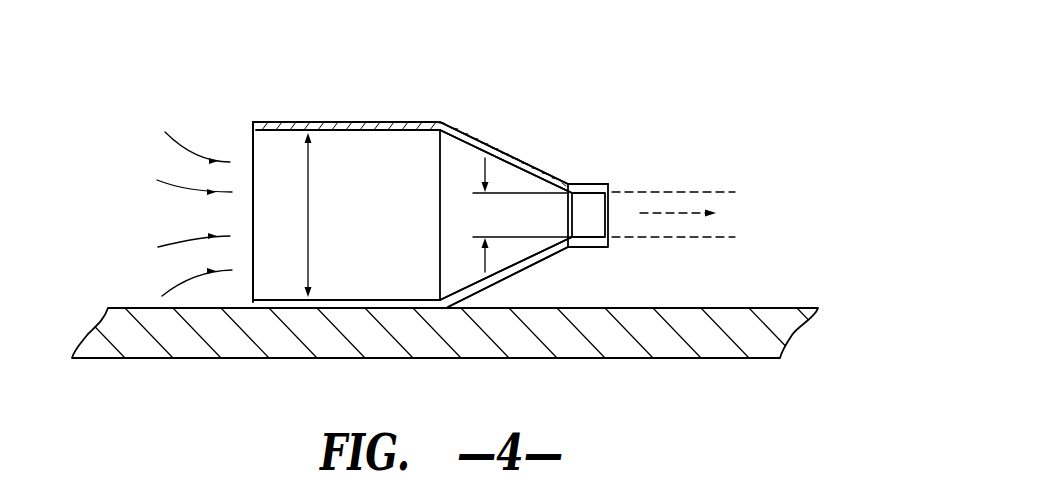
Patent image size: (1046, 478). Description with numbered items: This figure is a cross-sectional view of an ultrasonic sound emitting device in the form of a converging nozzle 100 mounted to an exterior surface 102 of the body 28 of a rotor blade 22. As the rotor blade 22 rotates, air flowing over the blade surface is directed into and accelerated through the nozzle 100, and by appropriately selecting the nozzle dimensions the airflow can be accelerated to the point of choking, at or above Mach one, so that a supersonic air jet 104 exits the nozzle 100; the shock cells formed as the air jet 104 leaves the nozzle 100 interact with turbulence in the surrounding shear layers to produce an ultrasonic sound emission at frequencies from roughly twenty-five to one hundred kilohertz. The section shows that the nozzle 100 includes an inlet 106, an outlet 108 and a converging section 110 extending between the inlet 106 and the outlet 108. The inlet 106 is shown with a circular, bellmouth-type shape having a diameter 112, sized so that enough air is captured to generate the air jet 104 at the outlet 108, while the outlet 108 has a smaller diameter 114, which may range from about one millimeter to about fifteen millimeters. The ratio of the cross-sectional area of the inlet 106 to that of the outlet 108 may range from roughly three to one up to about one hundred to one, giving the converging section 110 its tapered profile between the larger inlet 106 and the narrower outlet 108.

The converging nozzle 100 is at (422, 162).
The exterior surface 102 is at (458, 337).
The air jet 104 is at (677, 192).
The inlet 106 is at (252, 150).
The outlet 108 is at (612, 190).
The converging section 110 is at (579, 186).
The diameter 112 is at (309, 166).
The diameter 114 is at (472, 140).
The rotor blade 22 is at (679, 359).
The body 28 is at (749, 332).